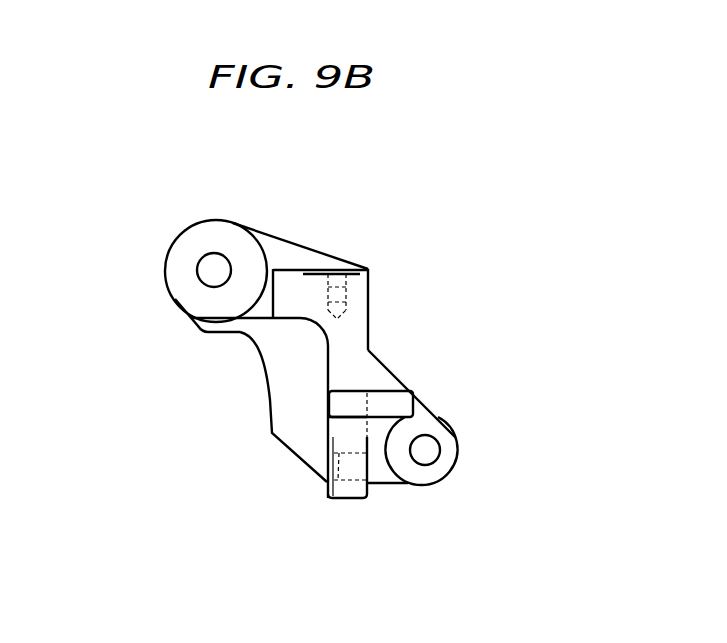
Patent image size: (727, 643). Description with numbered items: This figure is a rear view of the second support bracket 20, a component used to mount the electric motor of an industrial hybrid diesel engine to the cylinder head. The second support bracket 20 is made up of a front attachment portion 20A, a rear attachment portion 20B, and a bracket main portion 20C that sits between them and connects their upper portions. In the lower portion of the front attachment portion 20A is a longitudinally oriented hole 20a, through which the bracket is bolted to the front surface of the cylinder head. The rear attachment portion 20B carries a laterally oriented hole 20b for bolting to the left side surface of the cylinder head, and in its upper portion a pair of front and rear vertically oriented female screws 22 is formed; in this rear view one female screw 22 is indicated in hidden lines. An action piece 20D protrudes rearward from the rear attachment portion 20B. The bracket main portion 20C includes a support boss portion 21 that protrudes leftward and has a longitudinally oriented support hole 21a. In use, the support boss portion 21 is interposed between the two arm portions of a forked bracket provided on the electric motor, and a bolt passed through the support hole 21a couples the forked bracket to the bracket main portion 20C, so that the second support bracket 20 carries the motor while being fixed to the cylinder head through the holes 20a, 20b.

The second support bracket 20 is at (387, 243).
The front attachment portion 20A is at (286, 425).
The rear attachment portion 20B is at (390, 370).
The bracket main portion 20C is at (272, 240).
The action piece 20D is at (343, 403).
The longitudinally oriented hole 20a is at (426, 456).
The laterally oriented hole 20b is at (328, 500).
The support boss portion 21 is at (170, 289).
The support hole 21a is at (210, 262).
The female screw 22 is at (328, 291).